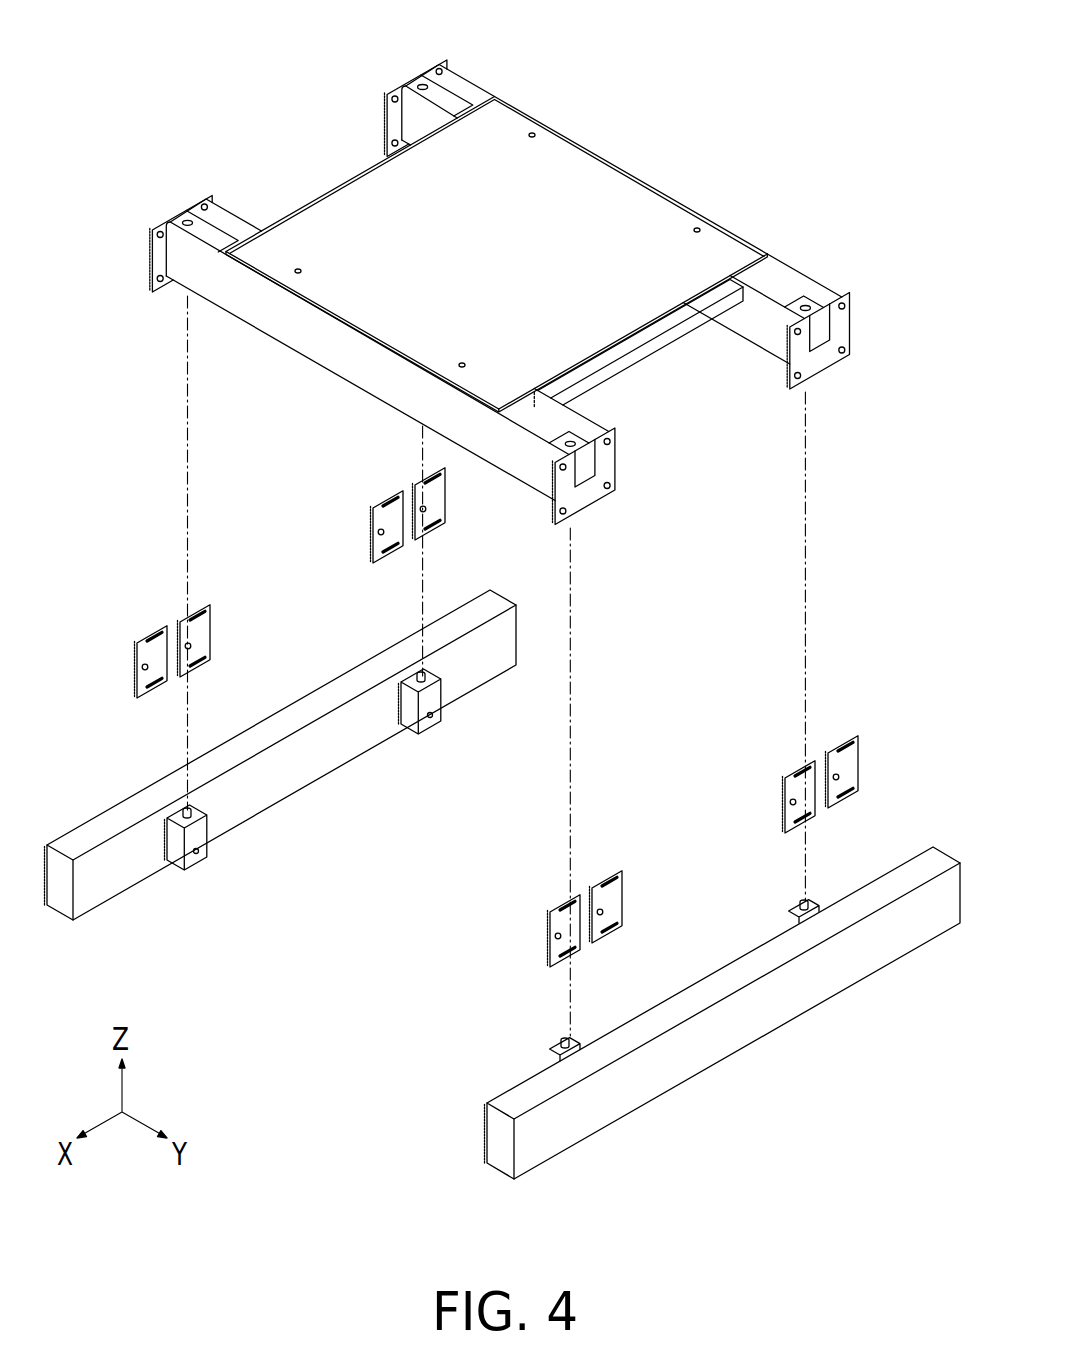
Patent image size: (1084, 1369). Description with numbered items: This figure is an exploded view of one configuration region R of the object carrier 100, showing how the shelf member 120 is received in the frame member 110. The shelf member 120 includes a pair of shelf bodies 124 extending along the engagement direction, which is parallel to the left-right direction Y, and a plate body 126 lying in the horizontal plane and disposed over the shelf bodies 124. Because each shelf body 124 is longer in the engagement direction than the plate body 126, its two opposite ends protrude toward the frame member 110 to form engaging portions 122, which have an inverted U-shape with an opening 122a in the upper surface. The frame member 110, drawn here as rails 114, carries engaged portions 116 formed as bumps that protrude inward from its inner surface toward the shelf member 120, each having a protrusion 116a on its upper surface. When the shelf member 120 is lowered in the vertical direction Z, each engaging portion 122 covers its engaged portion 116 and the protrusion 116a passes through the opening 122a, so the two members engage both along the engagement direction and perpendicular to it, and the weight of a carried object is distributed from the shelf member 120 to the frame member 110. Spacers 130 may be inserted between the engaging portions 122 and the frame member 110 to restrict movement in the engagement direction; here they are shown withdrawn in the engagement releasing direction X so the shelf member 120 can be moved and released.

The object carrier 100 is at (503, 615).
The frame member 110 is at (503, 884).
The rail of base 114 is at (312, 758).
The engaged portion 116 is at (407, 727).
The protrusion 116a is at (428, 693).
The shelf member 120 is at (500, 286).
The engaging portion 122 is at (410, 119).
The opening 122a is at (430, 80).
The shelf body 124 is at (322, 356).
The plate body 126 is at (553, 150).
The spacer 130 is at (373, 522).
The configuration region R is at (753, 663).